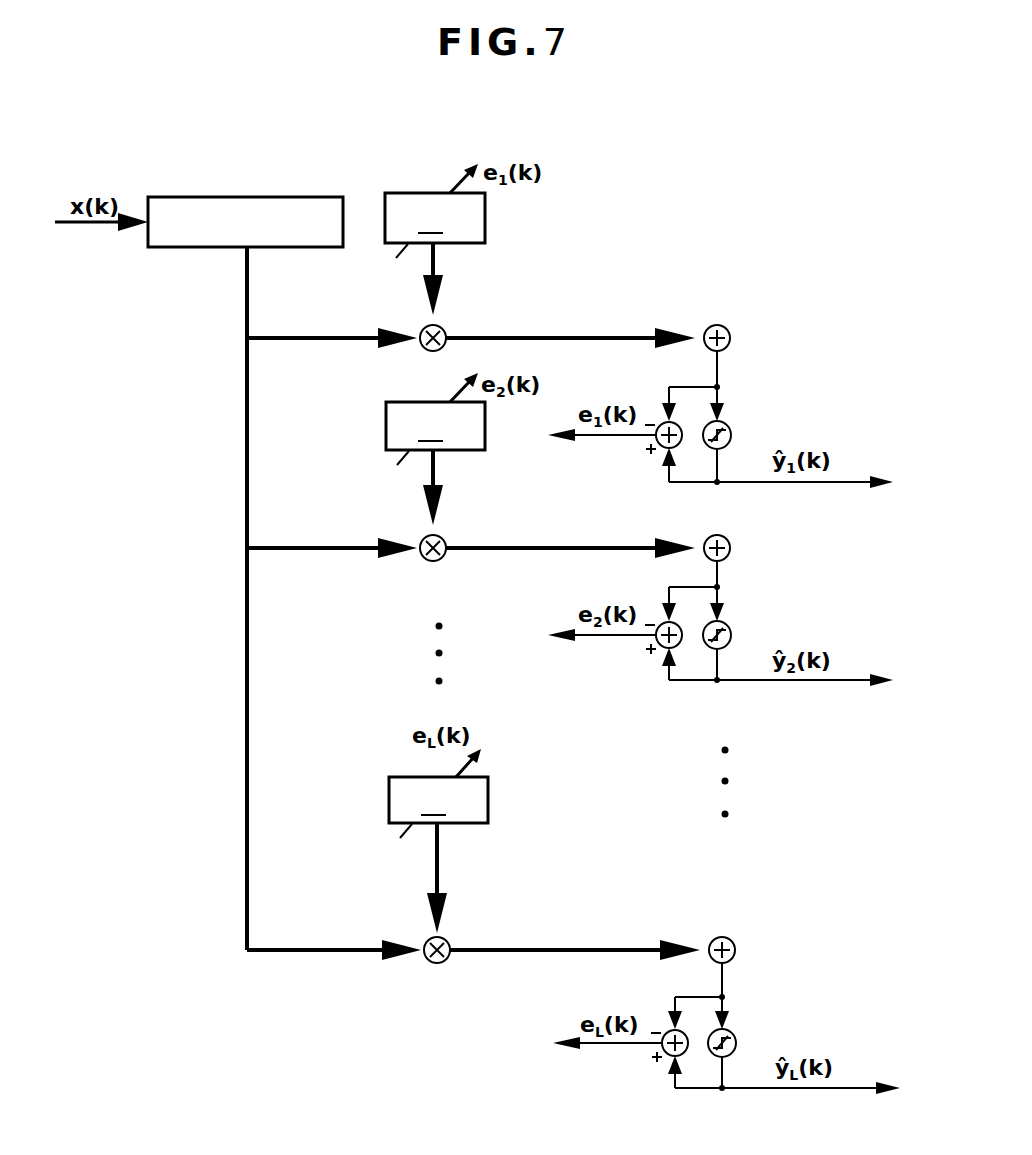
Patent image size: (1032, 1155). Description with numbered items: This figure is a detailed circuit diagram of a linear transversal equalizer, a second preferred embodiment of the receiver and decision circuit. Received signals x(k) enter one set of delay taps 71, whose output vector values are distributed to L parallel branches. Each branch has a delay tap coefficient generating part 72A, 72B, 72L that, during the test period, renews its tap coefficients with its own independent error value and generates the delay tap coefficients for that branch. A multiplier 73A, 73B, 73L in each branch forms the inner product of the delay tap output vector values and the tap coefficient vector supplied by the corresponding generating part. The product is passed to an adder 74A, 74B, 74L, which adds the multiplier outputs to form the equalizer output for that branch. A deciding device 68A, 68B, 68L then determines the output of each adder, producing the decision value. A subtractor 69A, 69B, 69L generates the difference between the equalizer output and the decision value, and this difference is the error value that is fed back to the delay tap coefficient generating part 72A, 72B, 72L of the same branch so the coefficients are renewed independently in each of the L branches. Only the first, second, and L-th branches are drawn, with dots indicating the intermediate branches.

The delay taps 71 is at (166, 250).
The delay tap coefficient generating part 72A is at (485, 218).
The delay tap coefficient generating part 72B is at (485, 425).
The delay tap coefficient generating part 72L is at (488, 797).
The multiplier 73A is at (422, 348).
The multiplier 73B is at (421, 536).
The multiplier 73L is at (430, 962).
The adder 74A is at (730, 334).
The adder 74B is at (730, 544).
The adder 74L is at (734, 943).
The deciding device 68A is at (731, 435).
The deciding device 68B is at (731, 635).
The deciding device 68L is at (736, 1043).
The subtractor 69A is at (662, 449).
The subtractor 69B is at (662, 649).
The subtractor 69L is at (668, 1056).